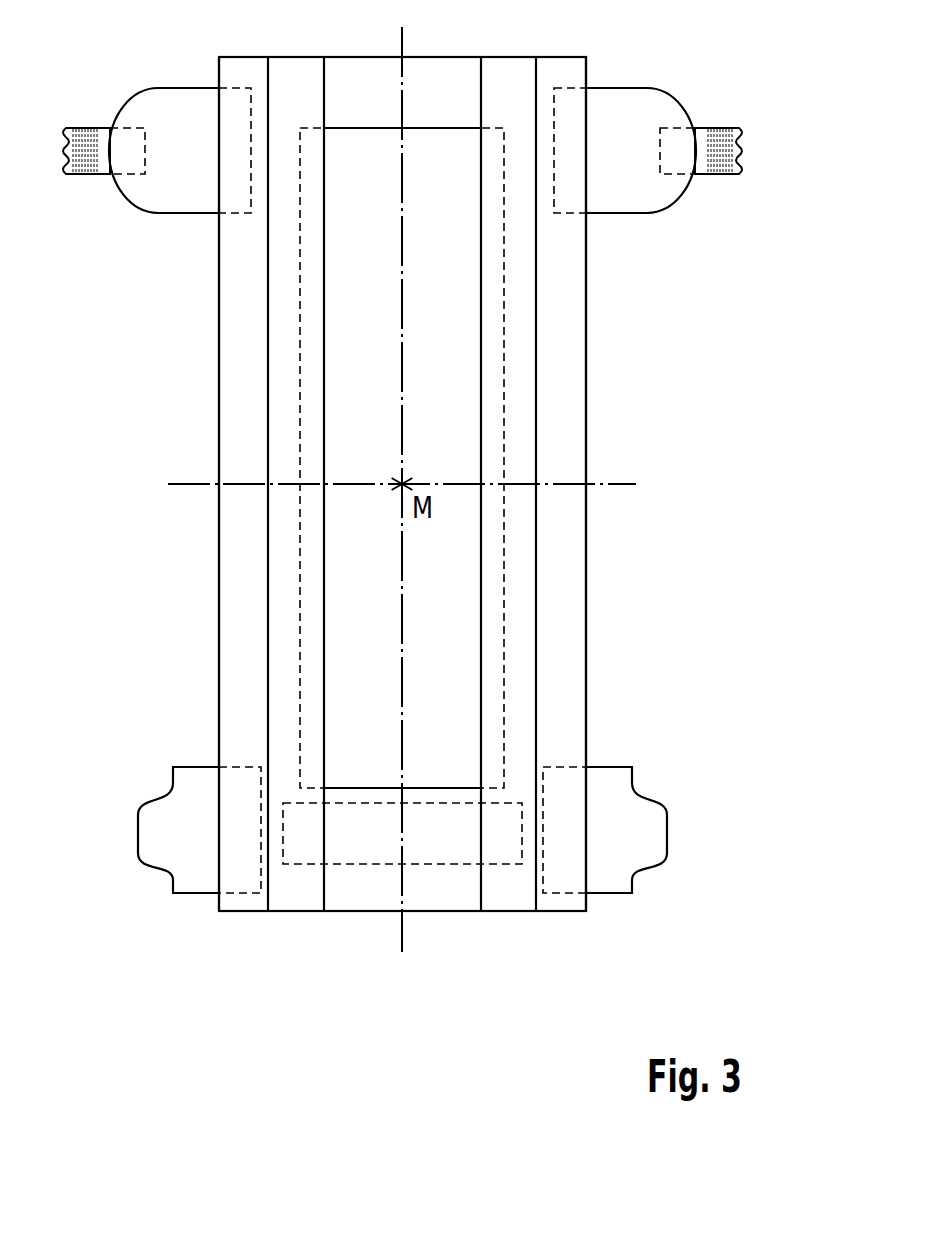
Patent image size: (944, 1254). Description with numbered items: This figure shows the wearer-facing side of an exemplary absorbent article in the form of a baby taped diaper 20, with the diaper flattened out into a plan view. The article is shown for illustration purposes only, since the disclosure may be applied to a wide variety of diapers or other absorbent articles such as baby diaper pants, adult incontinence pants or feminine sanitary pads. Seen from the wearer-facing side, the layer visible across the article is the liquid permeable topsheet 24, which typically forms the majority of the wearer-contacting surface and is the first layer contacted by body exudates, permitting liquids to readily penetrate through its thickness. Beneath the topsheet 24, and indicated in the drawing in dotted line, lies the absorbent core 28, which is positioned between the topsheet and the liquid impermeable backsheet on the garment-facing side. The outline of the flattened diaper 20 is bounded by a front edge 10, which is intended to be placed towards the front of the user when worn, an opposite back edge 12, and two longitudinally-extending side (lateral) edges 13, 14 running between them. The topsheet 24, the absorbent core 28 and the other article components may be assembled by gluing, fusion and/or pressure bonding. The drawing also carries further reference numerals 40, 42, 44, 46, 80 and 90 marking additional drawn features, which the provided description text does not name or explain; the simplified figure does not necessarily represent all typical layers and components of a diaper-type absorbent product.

The front edge 10 is at (543, 911).
The back edge 12 is at (555, 57).
The longitudinally-extending side edge 13 is at (587, 615).
The longitudinally-extending side edge 14 is at (218, 593).
The taped diaper 20 is at (666, 691).
The topsheet 24 is at (352, 73).
The absorbent core 28 is at (504, 356).
The rear ear 40 is at (167, 187).
The fastening tab 42 is at (103, 166).
The landing zone 44 is at (306, 853).
The front ear 46 is at (160, 838).
The longitudinal centerline 80 is at (402, 930).
The lateral centerline 90 is at (623, 484).